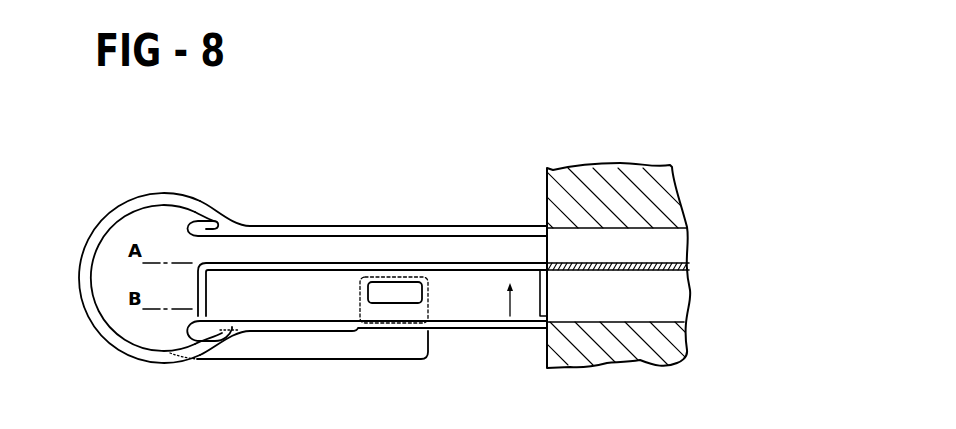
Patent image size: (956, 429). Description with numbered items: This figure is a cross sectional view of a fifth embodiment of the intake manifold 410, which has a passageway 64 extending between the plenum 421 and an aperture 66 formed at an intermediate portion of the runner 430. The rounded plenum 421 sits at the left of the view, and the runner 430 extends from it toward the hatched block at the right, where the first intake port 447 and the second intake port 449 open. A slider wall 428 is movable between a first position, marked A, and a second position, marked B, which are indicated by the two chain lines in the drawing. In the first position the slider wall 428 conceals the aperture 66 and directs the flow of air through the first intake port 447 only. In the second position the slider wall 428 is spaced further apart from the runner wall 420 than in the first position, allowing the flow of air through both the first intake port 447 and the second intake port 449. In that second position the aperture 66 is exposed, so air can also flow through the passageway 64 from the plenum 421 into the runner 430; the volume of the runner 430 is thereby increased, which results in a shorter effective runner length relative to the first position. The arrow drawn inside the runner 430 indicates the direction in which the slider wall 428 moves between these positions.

The intake manifold 410 is at (572, 127).
The runner wall 420 is at (362, 226).
The plenum 421 is at (165, 200).
The slider wall 428 is at (233, 326).
The runner 430 is at (487, 308).
The aperture 66 is at (417, 294).
The passageway 64 is at (322, 348).
The first intake port 447 is at (630, 254).
The second intake port 449 is at (630, 304).